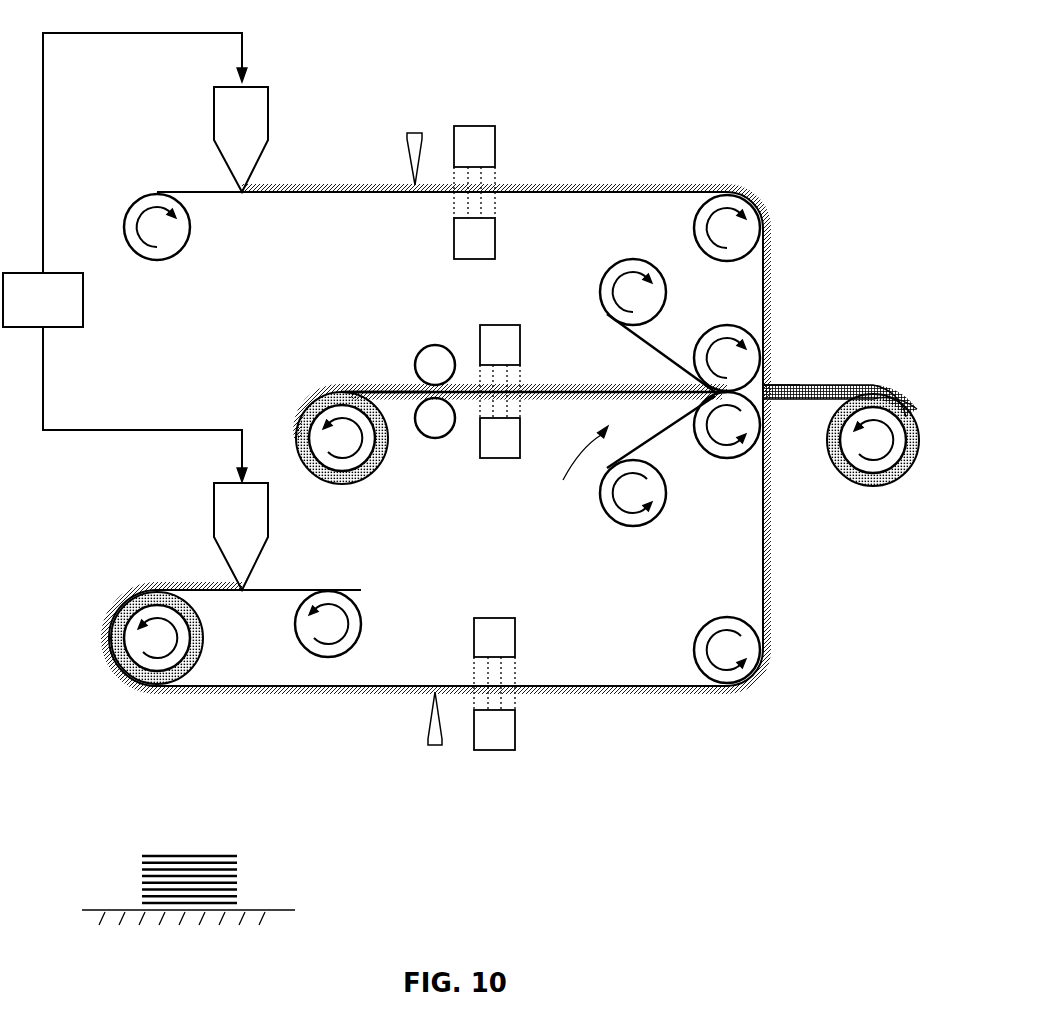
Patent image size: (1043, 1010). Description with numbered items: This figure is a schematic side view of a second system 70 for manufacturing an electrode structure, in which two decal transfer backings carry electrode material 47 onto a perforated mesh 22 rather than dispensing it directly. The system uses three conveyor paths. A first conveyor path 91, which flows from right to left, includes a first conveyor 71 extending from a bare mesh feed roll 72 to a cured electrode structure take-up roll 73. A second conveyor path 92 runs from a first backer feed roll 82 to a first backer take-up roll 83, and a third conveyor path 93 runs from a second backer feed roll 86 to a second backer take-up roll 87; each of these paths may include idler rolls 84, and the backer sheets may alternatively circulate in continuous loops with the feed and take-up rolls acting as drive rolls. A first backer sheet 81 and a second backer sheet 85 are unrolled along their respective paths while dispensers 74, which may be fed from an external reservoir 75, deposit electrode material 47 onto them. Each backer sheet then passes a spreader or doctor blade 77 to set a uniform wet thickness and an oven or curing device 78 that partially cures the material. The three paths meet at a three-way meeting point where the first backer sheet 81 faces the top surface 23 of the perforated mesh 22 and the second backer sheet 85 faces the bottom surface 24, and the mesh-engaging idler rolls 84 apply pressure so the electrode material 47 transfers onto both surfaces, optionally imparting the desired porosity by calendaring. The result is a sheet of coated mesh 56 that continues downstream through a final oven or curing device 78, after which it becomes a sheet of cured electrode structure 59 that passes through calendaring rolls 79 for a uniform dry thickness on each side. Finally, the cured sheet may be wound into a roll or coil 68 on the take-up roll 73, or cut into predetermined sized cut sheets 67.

The second system 70 is at (721, 64).
The second conveyor path 92 is at (768, 161).
The third conveyor path 93 is at (796, 687).
The first conveyor path 91 is at (855, 304).
The electrode material 47 is at (312, 187).
The first decal transfer backing or backer sheet 81 is at (370, 193).
The second decal transfer backing or backer sheet 85 is at (622, 682).
The first backer feed roll 82 is at (185, 243).
The first backer take-up roll 83 is at (622, 258).
The idler rolls 84 is at (713, 330).
The second backer feed roll 86 is at (358, 612).
The second backer take-up roll 87 is at (602, 503).
The dispensers 74 is at (229, 132).
The external reservoir 75 is at (30, 310).
The spreader or doctor blade 77 is at (413, 132).
The oven or curing device 78 is at (475, 125).
The roll or coil 68 is at (290, 374).
The cured electrode structure take-up roll 73 is at (367, 477).
The coated mesh 56 is at (587, 386).
The sheet of cured electrode structure 59 is at (398, 388).
The calendaring rolls 79 is at (427, 343).
The bottom surface 24 is at (567, 466).
The top surface 23 is at (786, 363).
The perforated mesh 22 is at (848, 385).
The first conveyor 71 is at (783, 400).
The bare mesh feed roll 72 is at (885, 486).
The cut sheets 67 is at (198, 818).